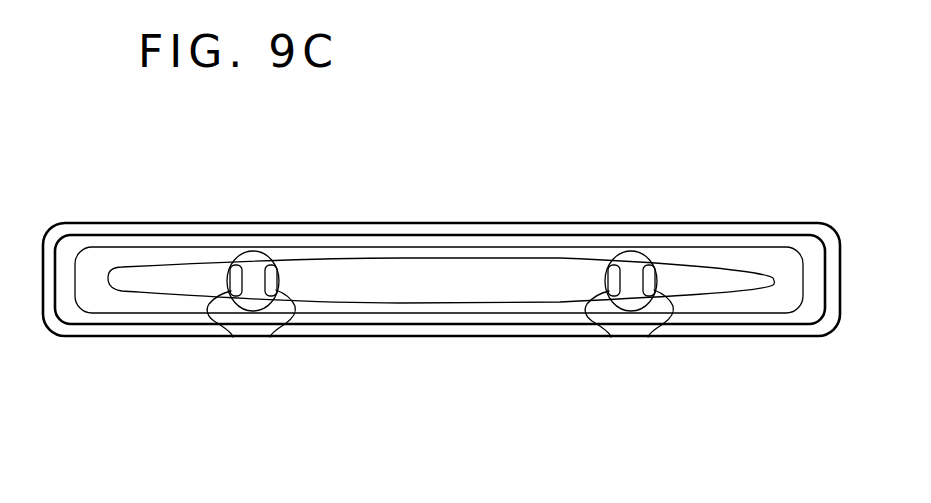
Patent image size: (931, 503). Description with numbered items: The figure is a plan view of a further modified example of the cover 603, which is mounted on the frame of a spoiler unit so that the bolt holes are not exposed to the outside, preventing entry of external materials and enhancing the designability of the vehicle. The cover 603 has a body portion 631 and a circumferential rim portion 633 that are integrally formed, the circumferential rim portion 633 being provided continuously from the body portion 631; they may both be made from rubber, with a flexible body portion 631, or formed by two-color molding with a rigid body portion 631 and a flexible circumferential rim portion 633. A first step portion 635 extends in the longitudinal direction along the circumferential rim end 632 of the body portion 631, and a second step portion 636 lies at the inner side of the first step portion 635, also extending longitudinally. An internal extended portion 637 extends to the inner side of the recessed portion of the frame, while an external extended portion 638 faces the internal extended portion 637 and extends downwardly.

The cover 603 is at (303, 209).
The body portion 631 is at (487, 322).
The circumferential rim end 632 is at (608, 244).
The circumferential rim portion 633 is at (375, 337).
The first step portion 635 is at (527, 257).
The second step portion 636 is at (438, 272).
The internal extended portion 637 is at (270, 337).
The external extended portion 638 is at (233, 337).